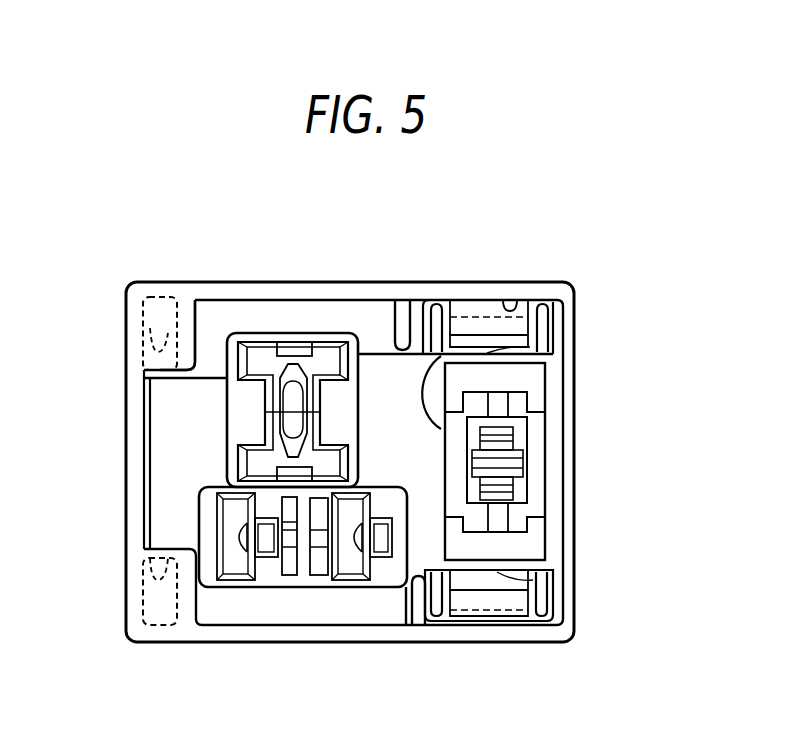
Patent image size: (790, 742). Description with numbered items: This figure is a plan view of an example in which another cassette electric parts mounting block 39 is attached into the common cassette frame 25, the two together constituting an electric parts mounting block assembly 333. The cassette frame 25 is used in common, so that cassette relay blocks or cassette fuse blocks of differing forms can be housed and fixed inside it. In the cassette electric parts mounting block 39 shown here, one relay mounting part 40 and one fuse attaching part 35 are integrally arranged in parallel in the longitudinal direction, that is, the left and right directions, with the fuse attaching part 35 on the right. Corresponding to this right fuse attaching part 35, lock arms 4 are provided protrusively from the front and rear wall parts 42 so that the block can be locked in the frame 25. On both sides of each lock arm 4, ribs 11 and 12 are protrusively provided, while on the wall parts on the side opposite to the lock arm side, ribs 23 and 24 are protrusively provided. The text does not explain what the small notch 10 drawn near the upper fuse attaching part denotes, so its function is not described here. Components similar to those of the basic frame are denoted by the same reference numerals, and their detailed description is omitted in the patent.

The lock arm 4 is at (472, 325).
The notch 10 is at (512, 304).
The rib 11 is at (550, 331).
The rib 12 is at (143, 323).
The rib 23 is at (399, 322).
The rib 24 is at (190, 347).
The cassette frame 25 is at (257, 276).
The fuse attaching part 35 is at (424, 400).
The cassette electric parts mounting block 39 is at (373, 345).
The relay mounting part 40 is at (294, 340).
The wall part 42 is at (550, 348).
The electric parts mounting block assembly 333 is at (652, 247).